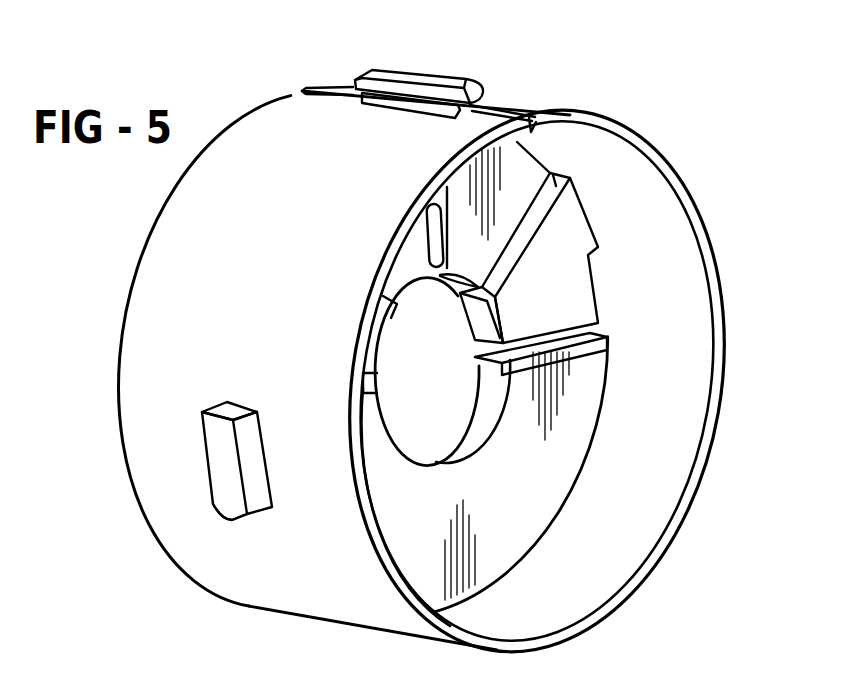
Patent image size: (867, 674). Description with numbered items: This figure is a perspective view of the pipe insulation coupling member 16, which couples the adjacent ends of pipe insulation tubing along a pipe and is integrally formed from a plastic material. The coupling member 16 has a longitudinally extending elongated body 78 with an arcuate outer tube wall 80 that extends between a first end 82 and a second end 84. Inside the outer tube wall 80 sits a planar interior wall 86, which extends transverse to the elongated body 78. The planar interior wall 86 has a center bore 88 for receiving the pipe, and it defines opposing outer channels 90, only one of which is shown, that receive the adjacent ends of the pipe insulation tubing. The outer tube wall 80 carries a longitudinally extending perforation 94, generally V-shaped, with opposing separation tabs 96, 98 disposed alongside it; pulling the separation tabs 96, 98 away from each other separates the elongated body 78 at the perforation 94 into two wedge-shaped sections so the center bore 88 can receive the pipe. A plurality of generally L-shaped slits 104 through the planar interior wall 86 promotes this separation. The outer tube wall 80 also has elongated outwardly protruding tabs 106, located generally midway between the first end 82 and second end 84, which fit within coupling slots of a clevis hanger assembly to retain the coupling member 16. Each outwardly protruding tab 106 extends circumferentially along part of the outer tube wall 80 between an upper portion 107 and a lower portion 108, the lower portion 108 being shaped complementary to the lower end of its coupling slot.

The pipe insulation coupling member 16 is at (678, 176).
The elongated body 78 is at (250, 106).
The outer tube wall 80 is at (723, 328).
The first end 82 is at (118, 392).
The second end 84 is at (398, 582).
The planar interior wall 86 is at (533, 477).
The center bore 88 is at (473, 417).
The outer channel 90 is at (700, 282).
The perforation 94 is at (530, 117).
The separation tab 96 is at (358, 72).
The separation tab 98 is at (472, 82).
The slit 104 is at (437, 228).
The outwardly protruding tab 106 is at (207, 470).
The upper portion 107 is at (220, 409).
The lower portion 108 is at (233, 519).